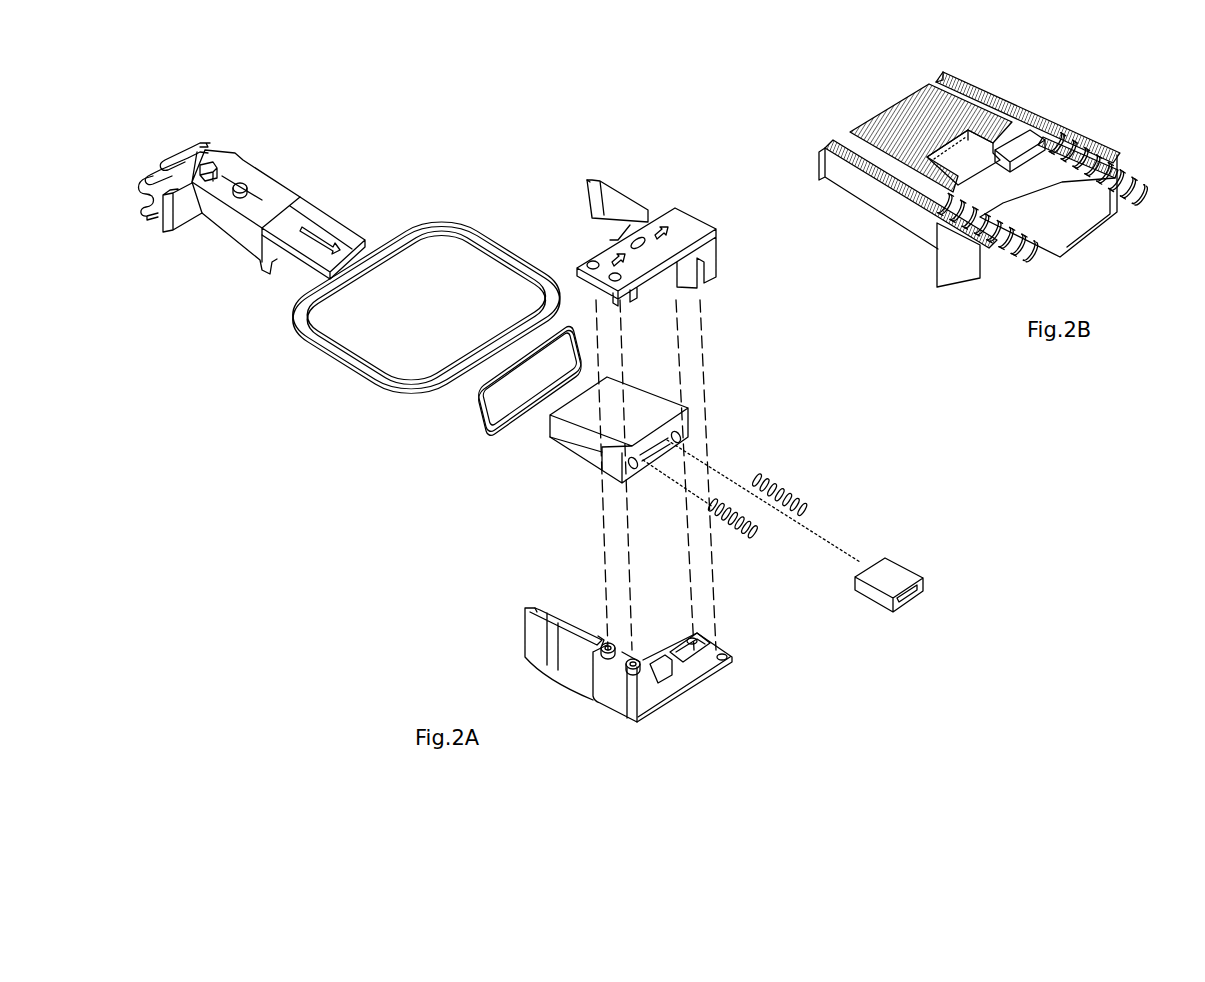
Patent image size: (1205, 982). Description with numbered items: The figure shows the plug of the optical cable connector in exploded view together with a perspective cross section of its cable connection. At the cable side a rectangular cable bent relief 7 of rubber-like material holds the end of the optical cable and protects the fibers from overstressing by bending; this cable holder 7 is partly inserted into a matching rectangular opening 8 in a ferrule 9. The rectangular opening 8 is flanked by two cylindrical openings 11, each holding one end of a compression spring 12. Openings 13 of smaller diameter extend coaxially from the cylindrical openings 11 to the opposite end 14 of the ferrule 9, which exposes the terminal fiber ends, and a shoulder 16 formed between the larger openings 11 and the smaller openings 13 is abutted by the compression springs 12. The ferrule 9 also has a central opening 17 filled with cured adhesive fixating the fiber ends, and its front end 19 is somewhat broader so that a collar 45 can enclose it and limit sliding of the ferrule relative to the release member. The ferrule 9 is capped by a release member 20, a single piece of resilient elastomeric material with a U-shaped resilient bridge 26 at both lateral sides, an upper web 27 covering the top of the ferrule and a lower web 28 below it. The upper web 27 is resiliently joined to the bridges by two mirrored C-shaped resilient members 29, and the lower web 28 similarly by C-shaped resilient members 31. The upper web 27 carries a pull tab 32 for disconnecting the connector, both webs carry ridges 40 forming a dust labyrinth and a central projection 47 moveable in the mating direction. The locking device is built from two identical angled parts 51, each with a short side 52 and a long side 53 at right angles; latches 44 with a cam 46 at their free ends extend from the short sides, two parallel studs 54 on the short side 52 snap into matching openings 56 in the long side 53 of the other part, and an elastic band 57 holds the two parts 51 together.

In FIG. 2A, the cable bent relief 7 is at (893, 573).
In FIG. 2B, the cable bent relief 7 is at (1087, 247).
In FIG. 2A, the rectangular opening 8 is at (672, 444).
In FIG. 2A, the ferrule 9 is at (573, 442).
In FIG. 2B, the ferrule 9 is at (990, 175).
In FIG. 2A, the cylindrical openings 11 is at (680, 433).
In FIG. 2A, the compression spring 12 is at (747, 520).
In FIG. 2B, the compression spring 12 is at (1130, 187).
In FIG. 2B, the openings of smaller diameter 13 is at (990, 100).
In FIG. 2B, the opposite end 14 is at (982, 173).
In FIG. 2B, the shoulder 16 is at (1073, 140).
In FIG. 2B, the central opening 17 is at (1035, 135).
In FIG. 2A, the front end 19 is at (600, 462).
In FIG. 2B, the front end 19 is at (950, 250).
In FIG. 2A, the release member 20 is at (235, 171).
In FIG. 2A, the U-shaped resilient bridge 26 is at (140, 212).
In FIG. 2A, the upper web 27 is at (208, 192).
In FIG. 2A, the lower web 28 is at (227, 233).
In FIG. 2A, the C-shaped resilient members 29 is at (193, 153).
In FIG. 2A, the C-shaped resilient members 31 is at (192, 213).
In FIG. 2A, the pull tab 32 is at (338, 355).
In FIG. 2A, the ridges 40 is at (298, 198).
In FIG. 2A, the latches 44 is at (630, 195).
In FIG. 2A, the collar 45 is at (602, 638).
In FIG. 2A, the cam 46 is at (585, 185).
In FIG. 2A, the central projection 47 is at (248, 190).
In FIG. 2A, the angled parts 51 is at (710, 253).
In FIG. 2A, the short side 52 is at (598, 670).
In FIG. 2A, the long side 53 is at (688, 687).
In FIG. 2A, the studs 54 is at (632, 670).
In FIG. 2A, the openings 56 is at (615, 273).
In FIG. 2A, the elastic band 57 is at (475, 415).